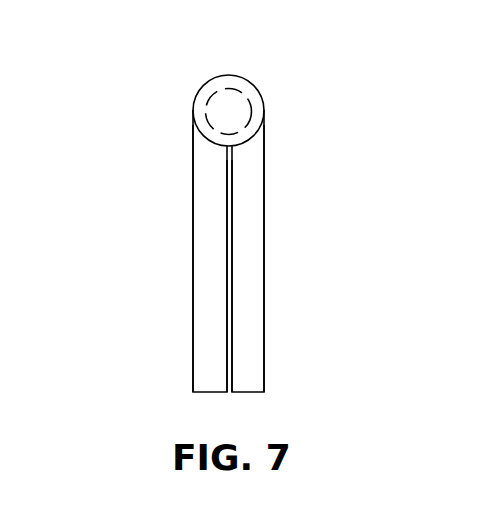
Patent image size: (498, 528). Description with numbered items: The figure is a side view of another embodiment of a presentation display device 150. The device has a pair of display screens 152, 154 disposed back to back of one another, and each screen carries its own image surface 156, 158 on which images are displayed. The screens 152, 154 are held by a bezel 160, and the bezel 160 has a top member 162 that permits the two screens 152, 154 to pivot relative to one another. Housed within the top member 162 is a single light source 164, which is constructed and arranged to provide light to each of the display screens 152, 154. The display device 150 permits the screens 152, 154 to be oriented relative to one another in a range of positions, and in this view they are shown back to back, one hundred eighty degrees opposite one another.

The presentation display device 150 is at (108, 89).
The display screen 152 is at (155, 155).
The display screen 154 is at (301, 143).
The image surface 156 is at (178, 237).
The image surface 158 is at (279, 217).
The bezel 160 is at (207, 297).
The top member 162 is at (251, 85).
The single light source 164 is at (223, 97).